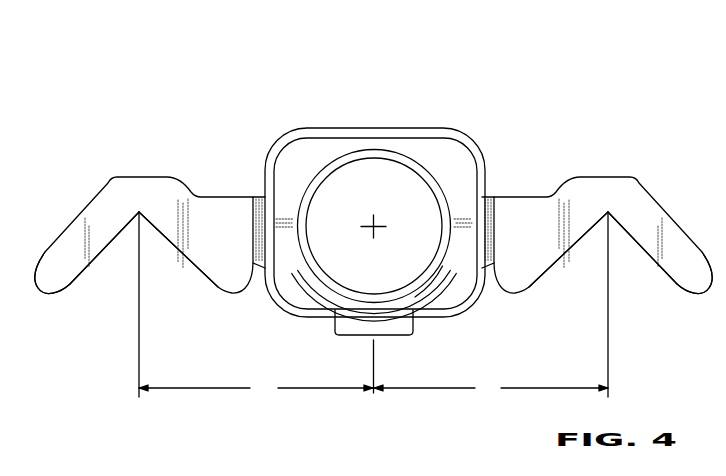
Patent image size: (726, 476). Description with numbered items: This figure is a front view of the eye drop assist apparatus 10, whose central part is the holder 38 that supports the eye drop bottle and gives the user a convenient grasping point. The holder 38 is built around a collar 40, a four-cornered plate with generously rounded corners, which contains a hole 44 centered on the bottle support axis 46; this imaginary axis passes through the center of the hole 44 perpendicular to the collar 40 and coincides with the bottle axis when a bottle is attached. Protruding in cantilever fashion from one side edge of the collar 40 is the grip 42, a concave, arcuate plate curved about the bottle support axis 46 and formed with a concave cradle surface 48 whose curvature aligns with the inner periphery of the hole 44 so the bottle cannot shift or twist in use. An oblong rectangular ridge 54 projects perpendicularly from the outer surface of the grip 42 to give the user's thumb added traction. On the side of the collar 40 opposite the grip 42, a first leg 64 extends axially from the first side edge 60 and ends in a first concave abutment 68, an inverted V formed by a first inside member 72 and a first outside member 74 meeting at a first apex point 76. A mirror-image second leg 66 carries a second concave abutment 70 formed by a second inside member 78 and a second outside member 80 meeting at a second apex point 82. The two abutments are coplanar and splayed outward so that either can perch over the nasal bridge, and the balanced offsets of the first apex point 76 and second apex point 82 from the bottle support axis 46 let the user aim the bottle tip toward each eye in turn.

The apparatus 10 is at (636, 127).
The holder 38 is at (412, 124).
The collar 40 is at (457, 132).
The grip 42 is at (457, 303).
The hole 44 is at (308, 238).
The bottle support axis 46 is at (375, 227).
The cradle surface 48 is at (383, 293).
The ridge 54 is at (332, 315).
The first side edge 60 is at (483, 473).
The first leg 64 is at (493, 223).
The second leg 66 is at (253, 223).
The first concave abutment 68 is at (566, 177).
The second concave abutment 70 is at (184, 178).
The first inside member 72 is at (557, 270).
The first outside member 74 is at (707, 293).
The first apex point 76 is at (613, 217).
The second inside member 78 is at (193, 267).
The second outside member 80 is at (42, 293).
The second apex point 82 is at (137, 214).